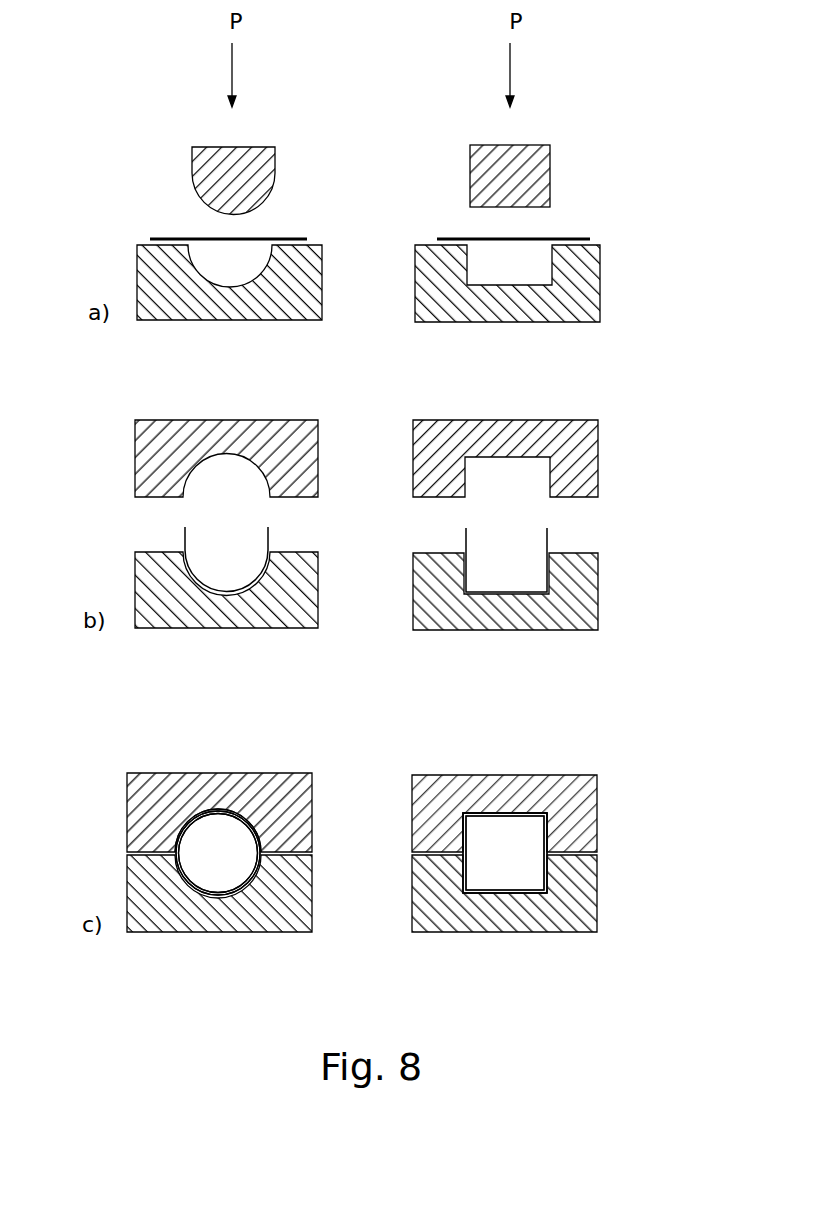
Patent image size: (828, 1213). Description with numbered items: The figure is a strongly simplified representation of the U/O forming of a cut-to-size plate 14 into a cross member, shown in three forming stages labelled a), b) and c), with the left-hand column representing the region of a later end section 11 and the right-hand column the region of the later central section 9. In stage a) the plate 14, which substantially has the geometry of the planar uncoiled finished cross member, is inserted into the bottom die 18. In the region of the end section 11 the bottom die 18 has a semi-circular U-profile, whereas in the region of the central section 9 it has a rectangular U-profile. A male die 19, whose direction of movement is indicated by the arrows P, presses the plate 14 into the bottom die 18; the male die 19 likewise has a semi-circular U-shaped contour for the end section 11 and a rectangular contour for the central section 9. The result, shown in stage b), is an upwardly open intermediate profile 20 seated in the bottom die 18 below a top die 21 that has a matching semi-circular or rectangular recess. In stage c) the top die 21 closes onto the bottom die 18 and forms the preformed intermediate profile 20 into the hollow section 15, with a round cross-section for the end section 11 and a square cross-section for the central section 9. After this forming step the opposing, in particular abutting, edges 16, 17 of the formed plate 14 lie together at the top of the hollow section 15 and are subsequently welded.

The central section 9 is at (492, 893).
The end section 11 is at (203, 893).
The plate 14 is at (287, 238).
The hollow section 15 is at (277, 822).
The edge 16 is at (210, 810).
The outer layer 17 is at (227, 810).
The bottom die 18 is at (312, 278).
The male die 19 is at (202, 175).
The intermediate profile 20 is at (270, 540).
The top die 21 is at (137, 467).